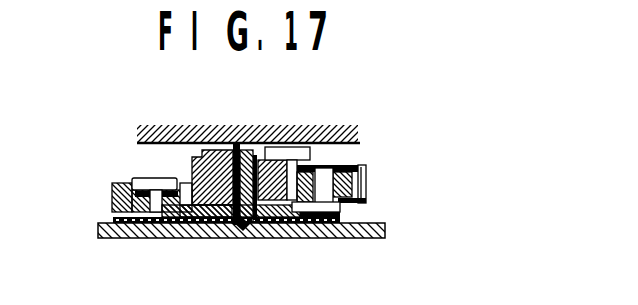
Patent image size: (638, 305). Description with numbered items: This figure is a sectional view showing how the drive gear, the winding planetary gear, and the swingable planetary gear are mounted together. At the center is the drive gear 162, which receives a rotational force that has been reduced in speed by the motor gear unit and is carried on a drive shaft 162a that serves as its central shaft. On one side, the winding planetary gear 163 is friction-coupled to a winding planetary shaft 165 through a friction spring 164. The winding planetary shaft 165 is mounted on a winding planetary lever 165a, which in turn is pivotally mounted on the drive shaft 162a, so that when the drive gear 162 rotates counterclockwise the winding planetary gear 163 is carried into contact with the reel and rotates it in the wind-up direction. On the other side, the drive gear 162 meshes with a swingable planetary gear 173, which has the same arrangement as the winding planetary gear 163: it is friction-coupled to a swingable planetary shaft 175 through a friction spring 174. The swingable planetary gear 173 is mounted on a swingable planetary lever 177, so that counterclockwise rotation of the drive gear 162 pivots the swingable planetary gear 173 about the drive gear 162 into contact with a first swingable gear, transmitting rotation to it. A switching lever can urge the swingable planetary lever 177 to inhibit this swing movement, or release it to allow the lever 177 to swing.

The drive gear 162 is at (202, 148).
The drive shaft 162a is at (240, 148).
The winding planetary gear 163 is at (363, 160).
The friction spring 164 is at (312, 156).
The winding planetary shaft 165 is at (327, 156).
The winding planetary lever 165a is at (302, 213).
The swingable planetary gear 173 is at (112, 187).
The friction spring 174 is at (166, 214).
The swingable planetary shaft 175 is at (137, 180).
The swingable planetary lever 177 is at (113, 220).